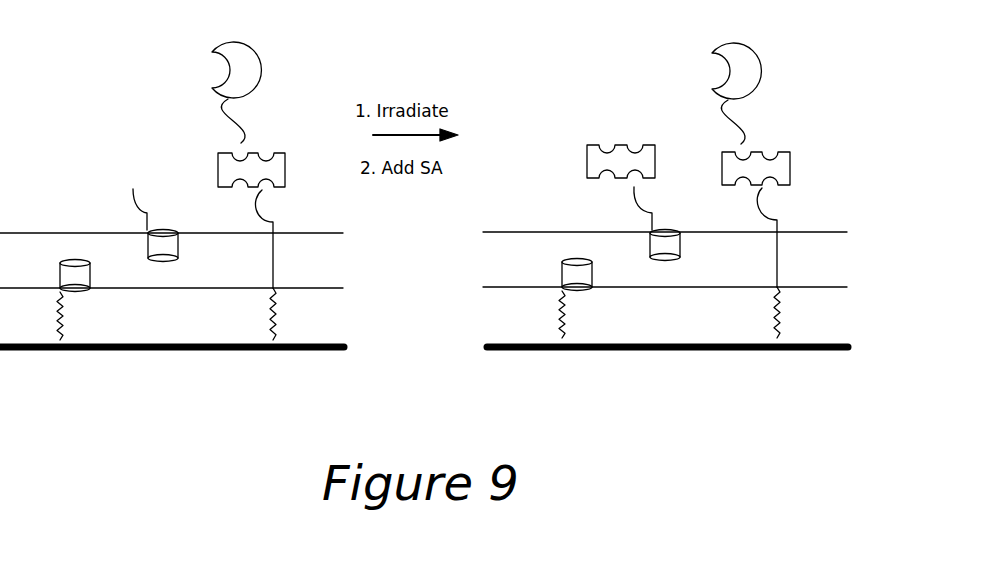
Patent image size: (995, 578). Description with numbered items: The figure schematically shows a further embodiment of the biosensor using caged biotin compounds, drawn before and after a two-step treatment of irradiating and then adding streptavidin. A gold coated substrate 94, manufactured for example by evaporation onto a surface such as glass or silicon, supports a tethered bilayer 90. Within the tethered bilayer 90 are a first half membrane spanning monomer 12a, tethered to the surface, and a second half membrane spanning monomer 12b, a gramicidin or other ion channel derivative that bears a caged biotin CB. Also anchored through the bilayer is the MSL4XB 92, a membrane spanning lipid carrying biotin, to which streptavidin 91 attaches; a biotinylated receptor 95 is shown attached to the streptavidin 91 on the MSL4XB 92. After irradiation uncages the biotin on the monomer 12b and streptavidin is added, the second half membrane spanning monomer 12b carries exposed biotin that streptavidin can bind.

The tethered bilayer 90 is at (333, 253).
The streptavidin 91 is at (284, 168).
The MSL4XB 92 is at (277, 267).
The gold coated substrate 94 is at (198, 352).
The biotinylated receptor 95 is at (258, 87).
The first half membrane spanning monomer 12a is at (90, 275).
The second half membrane spanning monomer 12b is at (178, 238).